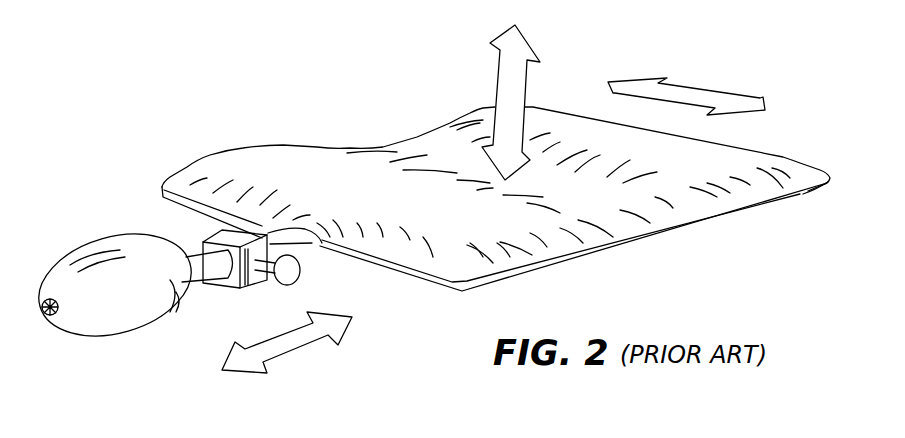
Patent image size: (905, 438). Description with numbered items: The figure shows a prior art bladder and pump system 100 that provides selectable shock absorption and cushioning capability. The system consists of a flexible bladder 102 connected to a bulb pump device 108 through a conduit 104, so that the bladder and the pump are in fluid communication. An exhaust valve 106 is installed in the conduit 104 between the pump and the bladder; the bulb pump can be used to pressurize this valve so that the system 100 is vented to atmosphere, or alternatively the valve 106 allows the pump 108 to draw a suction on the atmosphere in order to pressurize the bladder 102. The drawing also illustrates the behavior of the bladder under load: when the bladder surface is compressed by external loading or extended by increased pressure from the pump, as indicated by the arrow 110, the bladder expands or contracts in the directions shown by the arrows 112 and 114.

The bladder and pump system 100 is at (442, 209).
The flexible bladder 102 is at (317, 163).
The conduit 104 is at (200, 260).
The exhaust valve 106 is at (249, 288).
The bulb pump device 108 is at (93, 323).
The arrow 110 is at (515, 55).
The arrow 112 is at (680, 90).
The arrow 114 is at (285, 355).